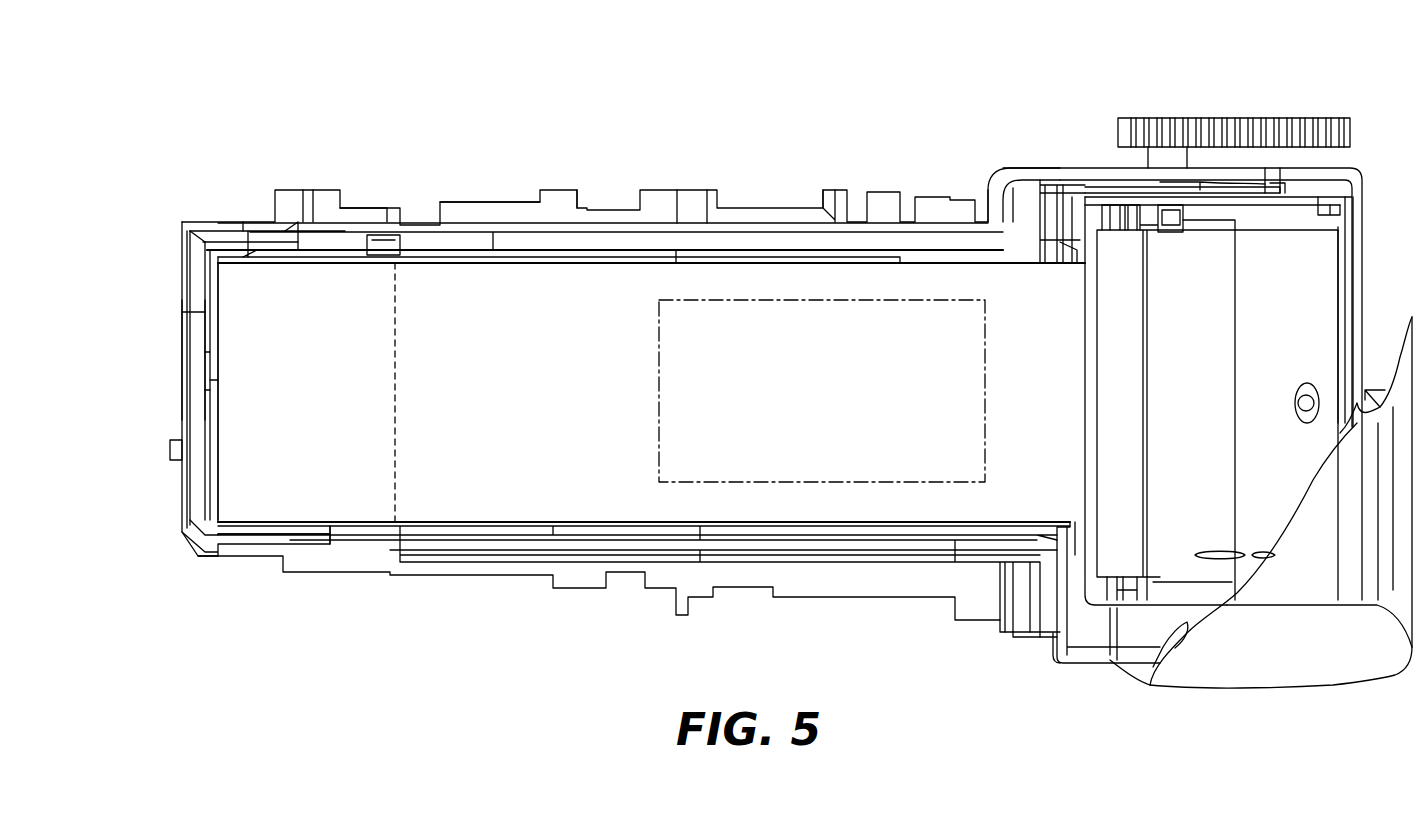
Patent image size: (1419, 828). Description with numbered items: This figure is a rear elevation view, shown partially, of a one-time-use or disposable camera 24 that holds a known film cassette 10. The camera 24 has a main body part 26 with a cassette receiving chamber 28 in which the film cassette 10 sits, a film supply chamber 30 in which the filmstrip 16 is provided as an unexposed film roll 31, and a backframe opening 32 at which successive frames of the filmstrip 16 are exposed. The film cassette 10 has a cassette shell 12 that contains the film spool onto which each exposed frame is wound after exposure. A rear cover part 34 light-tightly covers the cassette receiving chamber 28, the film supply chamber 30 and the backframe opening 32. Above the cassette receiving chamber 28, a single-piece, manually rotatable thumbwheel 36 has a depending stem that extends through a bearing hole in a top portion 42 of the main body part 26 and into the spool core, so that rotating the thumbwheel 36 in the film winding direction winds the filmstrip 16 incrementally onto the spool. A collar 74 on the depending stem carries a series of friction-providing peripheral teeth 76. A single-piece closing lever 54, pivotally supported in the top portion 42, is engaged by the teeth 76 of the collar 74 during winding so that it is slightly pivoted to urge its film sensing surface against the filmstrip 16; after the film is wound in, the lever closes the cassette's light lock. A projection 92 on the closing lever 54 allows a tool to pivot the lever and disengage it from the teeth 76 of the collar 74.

The film cassette 10 is at (1326, 288).
The cassette shell 12 is at (1334, 330).
The filmstrip 16 is at (521, 370).
The one-time-use camera 24 is at (309, 142).
The main body part 26 is at (477, 230).
The cassette receiving chamber 28 is at (1340, 252).
The film supply chamber 30 is at (220, 343).
The unexposed film roll 31 is at (283, 479).
The backframe opening 32 is at (657, 450).
The rear cover part 34 is at (1237, 648).
The thumbwheel 36 is at (1118, 118).
The top portion 42 is at (1050, 175).
The closing lever 54 is at (1086, 190).
The collar 74 is at (1197, 183).
The peripheral teeth 76 is at (1268, 180).
The projection 92 is at (1040, 190).